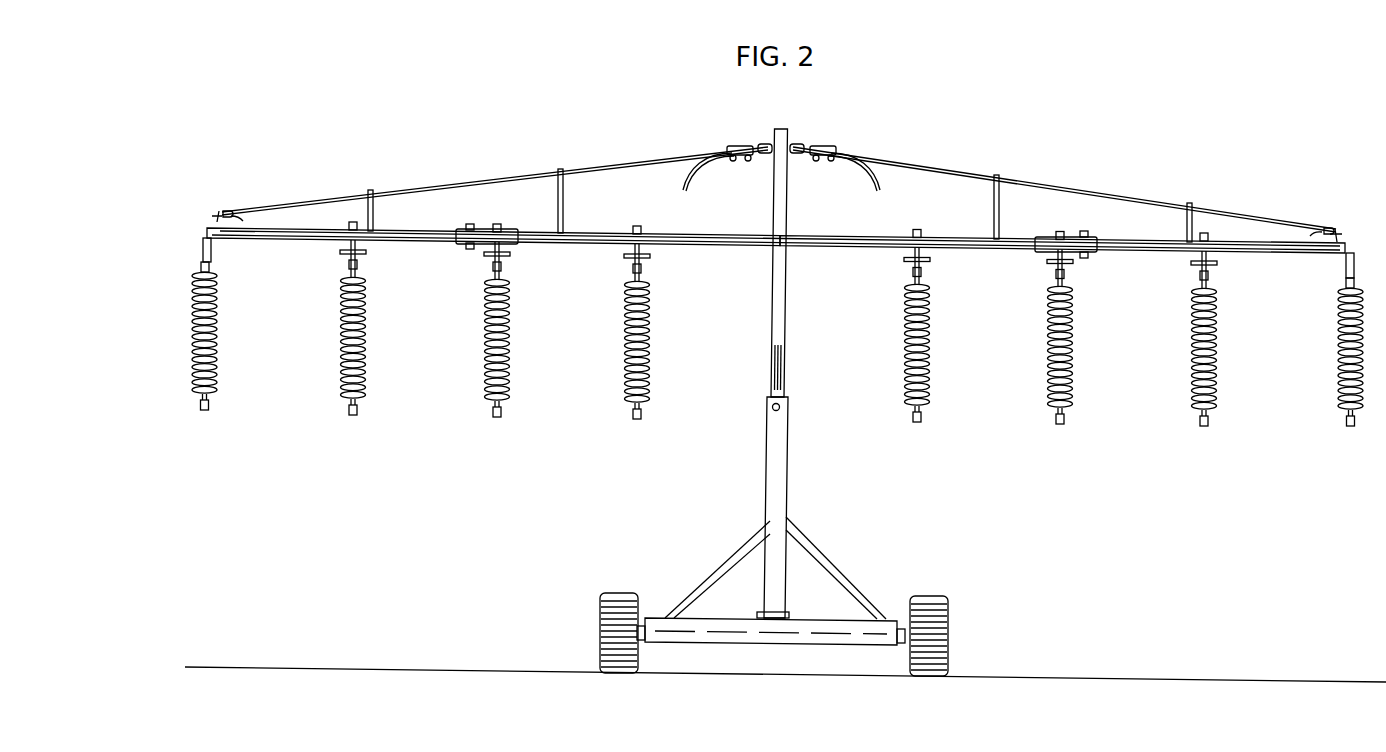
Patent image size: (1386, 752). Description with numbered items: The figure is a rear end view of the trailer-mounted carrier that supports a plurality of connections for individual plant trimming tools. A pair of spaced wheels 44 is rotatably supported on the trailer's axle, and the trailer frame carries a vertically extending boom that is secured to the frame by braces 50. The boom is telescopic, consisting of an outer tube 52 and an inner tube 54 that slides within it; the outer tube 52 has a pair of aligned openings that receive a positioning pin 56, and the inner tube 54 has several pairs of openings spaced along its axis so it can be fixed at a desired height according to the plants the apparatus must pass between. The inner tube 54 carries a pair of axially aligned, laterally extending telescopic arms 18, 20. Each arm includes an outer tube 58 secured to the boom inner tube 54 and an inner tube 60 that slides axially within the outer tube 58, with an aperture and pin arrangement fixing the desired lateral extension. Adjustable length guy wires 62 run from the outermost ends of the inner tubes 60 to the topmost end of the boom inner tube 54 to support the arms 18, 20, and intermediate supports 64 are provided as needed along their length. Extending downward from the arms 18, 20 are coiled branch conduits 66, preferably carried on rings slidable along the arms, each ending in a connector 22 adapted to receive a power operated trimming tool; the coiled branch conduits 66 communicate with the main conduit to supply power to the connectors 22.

The telescopic arm 18 is at (470, 173).
The telescopic arm 20 is at (1163, 190).
The connector 22 is at (212, 416).
The wheel 44 is at (598, 628).
The brace 50 is at (712, 572).
The outer tube 52 is at (784, 520).
The inner tube 54 is at (768, 350).
The positioning pin 56 is at (789, 408).
The outer tube 58 is at (708, 241).
The inner tube 60 is at (1128, 243).
The guy wire 62 is at (635, 152).
The intermediate support 64 is at (368, 213).
The coiled branch conduit 66 is at (222, 332).